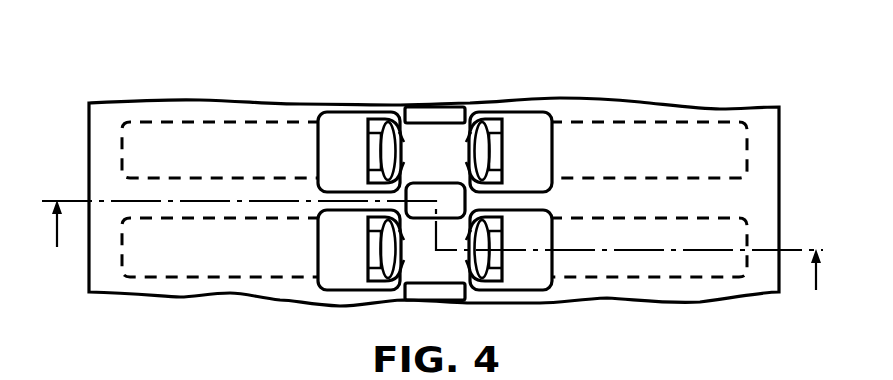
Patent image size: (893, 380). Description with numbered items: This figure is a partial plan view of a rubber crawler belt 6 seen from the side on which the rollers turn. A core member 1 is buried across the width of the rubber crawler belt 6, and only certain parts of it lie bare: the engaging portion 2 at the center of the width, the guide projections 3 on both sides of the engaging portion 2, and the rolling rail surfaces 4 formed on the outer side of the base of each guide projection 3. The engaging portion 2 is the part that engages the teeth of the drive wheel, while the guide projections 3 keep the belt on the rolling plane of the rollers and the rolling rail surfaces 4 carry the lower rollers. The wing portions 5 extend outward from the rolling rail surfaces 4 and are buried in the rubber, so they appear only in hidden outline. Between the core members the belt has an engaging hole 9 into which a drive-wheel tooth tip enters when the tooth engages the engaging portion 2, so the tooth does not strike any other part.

The core member 1 is at (557, 65).
The engaging portion 2 is at (439, 135).
The guide projection 3 is at (496, 155).
The rolling rail surface 4 is at (537, 137).
The wing portion 5 is at (627, 138).
The rubber crawler belt 6 is at (779, 163).
The engaging hole 9 is at (428, 195).